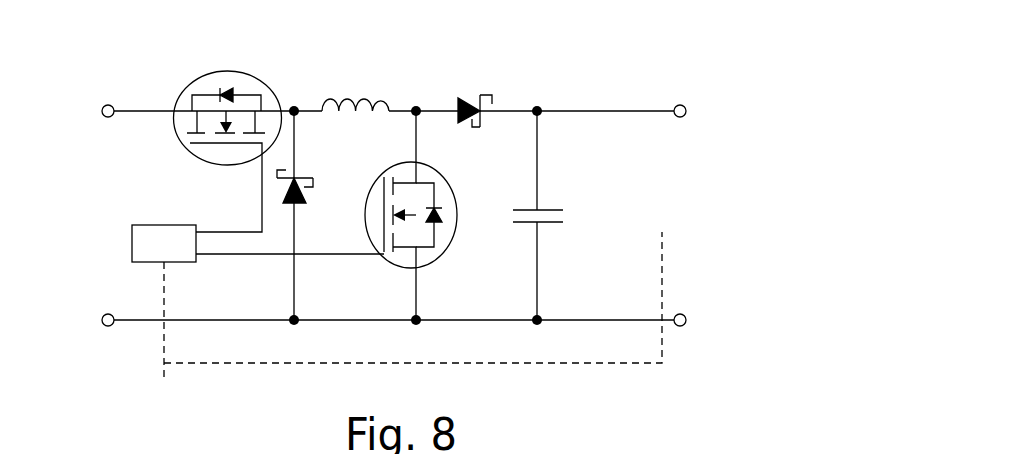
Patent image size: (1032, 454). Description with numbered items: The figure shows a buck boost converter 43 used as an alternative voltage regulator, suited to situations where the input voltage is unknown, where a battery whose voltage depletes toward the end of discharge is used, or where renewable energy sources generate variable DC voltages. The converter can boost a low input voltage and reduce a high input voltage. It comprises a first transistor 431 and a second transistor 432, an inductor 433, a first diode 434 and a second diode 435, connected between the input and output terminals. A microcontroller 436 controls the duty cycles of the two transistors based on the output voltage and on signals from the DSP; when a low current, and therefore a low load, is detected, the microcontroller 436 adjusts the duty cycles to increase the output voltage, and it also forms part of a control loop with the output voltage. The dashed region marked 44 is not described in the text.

The buck boost converter 43 is at (700, 75).
The control unit 44 is at (737, 453).
The first transistor 431 is at (252, 77).
The second transistor 432 is at (453, 196).
The inductor 433 is at (369, 95).
The first diode 434 is at (310, 185).
The second diode 435 is at (470, 94).
The microcontroller 436 is at (164, 243).